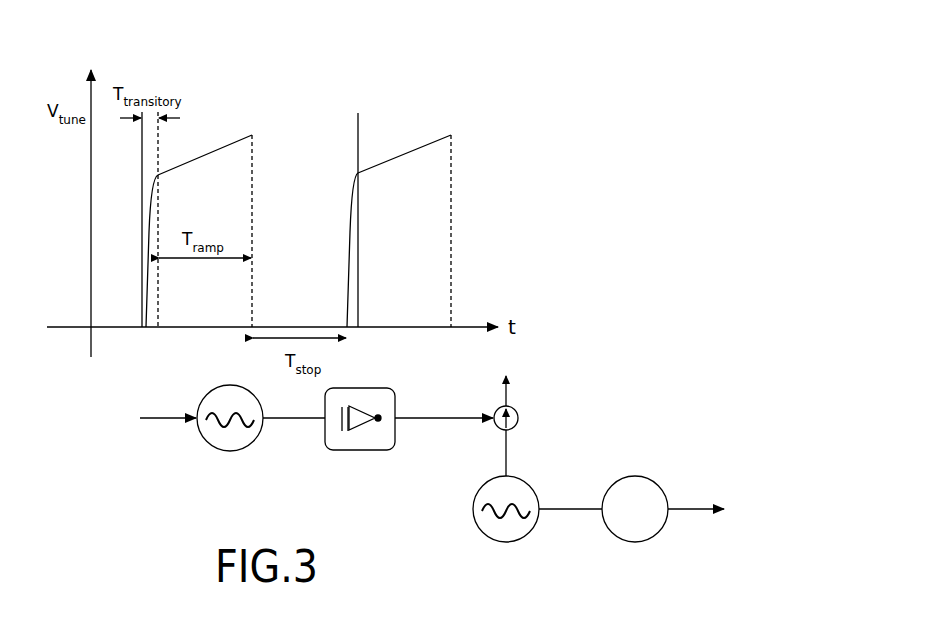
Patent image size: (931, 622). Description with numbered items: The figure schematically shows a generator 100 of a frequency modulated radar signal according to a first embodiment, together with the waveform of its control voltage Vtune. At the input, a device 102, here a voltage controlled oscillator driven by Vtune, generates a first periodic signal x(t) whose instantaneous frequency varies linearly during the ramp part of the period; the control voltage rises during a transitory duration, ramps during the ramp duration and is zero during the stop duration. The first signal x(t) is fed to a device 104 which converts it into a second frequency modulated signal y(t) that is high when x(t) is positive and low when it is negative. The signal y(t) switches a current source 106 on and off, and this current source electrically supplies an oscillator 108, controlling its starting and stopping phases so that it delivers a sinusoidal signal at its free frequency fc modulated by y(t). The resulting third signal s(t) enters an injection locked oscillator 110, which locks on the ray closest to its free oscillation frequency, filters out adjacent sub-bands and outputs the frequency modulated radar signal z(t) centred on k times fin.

The generator 100 is at (630, 388).
The device for generating a first periodic signal 102 is at (220, 450).
The device for converting the first periodic signal 104 is at (366, 388).
The current source 106 is at (516, 406).
The oscillator 108 is at (473, 507).
The injection locked oscillator 110 is at (660, 484).